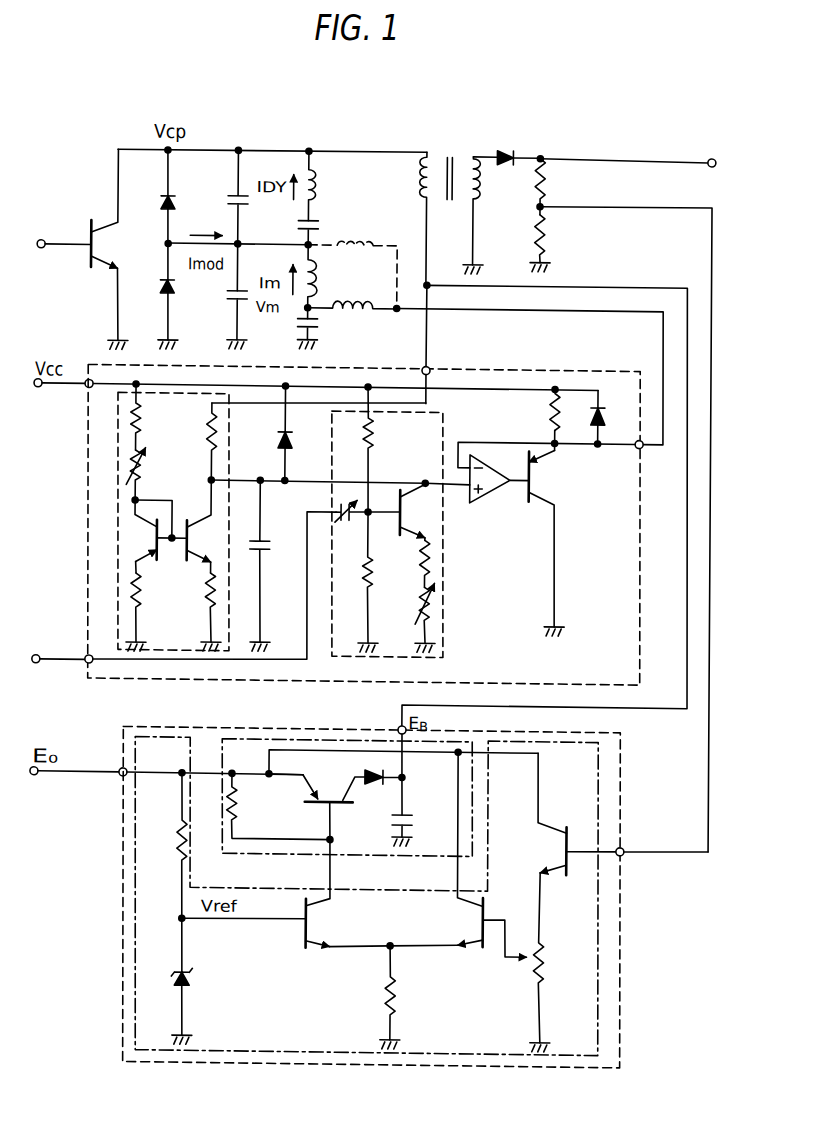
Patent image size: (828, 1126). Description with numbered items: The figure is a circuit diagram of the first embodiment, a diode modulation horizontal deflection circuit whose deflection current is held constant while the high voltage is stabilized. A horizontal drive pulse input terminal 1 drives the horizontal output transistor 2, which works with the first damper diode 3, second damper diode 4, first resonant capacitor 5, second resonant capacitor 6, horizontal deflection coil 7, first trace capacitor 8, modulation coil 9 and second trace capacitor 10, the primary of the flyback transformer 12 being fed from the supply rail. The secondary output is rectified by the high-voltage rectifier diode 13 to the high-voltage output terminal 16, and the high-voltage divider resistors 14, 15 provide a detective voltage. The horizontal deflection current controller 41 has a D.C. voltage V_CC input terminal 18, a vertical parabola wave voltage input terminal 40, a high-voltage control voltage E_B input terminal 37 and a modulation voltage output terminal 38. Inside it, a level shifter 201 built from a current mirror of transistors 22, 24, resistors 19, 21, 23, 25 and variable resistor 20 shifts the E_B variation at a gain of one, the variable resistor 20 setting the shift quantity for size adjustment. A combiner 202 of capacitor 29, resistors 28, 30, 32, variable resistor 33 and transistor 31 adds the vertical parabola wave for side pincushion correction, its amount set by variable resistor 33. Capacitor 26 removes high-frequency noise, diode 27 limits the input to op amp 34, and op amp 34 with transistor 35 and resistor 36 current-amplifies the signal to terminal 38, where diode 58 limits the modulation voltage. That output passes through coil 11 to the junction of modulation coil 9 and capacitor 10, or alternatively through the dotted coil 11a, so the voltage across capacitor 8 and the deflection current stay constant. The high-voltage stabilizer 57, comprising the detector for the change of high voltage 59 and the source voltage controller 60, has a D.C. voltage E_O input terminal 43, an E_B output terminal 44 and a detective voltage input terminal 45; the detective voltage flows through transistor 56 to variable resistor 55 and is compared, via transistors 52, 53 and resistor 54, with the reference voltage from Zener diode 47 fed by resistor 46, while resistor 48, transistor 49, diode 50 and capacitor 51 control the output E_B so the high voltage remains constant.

The horizontal drive pulse input terminal 1 is at (42, 254).
The horizontal output transistor 2 is at (99, 273).
The first damper diode 3 is at (160, 204).
The second damper diode 4 is at (162, 299).
The first resonant capacitor 5 is at (228, 200).
The second resonant capacitor 6 is at (232, 300).
The horizontal deflection coil 7 is at (316, 186).
The first trace capacitor 8 is at (296, 224).
The modulation coil 9 is at (314, 268).
The second trace capacitor 10 is at (311, 324).
The coil 11 is at (368, 312).
The coil 11a is at (364, 238).
The flyback transformer 12 is at (446, 150).
The high-voltage rectifier diode 13 is at (501, 148).
The high-voltage divider resistor 14 is at (543, 180).
The high-voltage divider resistor 15 is at (543, 235).
The high-voltage output terminal 16 is at (709, 154).
The D.C. voltage V_CC input terminal 18 is at (85, 392).
The resistor 19 is at (141, 418).
The variable resistor 20 is at (142, 479).
The resistor 21 is at (205, 431).
The transistor 22 is at (151, 562).
The resistor 23 is at (141, 606).
The transistor 24 is at (212, 538).
The resistor 25 is at (217, 598).
The capacitor 26 is at (265, 541).
The diode 27 is at (280, 436).
The resistor 28 is at (373, 436).
The capacitor 29 is at (340, 527).
The resistor 30 is at (374, 577).
The transistor 31 is at (422, 516).
The resistor 32 is at (433, 555).
The variable resistor 33 is at (434, 604).
The op amp 34 is at (500, 491).
The transistor 35 is at (545, 480).
The resistor 36 is at (549, 399).
The high-voltage control voltage E_B input terminal 37 is at (429, 368).
The modulation voltage output terminal 38 is at (641, 447).
The vertical parabola wave voltage input terminal 40 is at (88, 661).
The horizontal deflection current controller 41 is at (100, 688).
The D.C. voltage E_O input terminal 43 is at (121, 779).
The high-voltage control voltage E_B output terminal 44 is at (399, 729).
The high-voltage detective voltage input terminal 45 is at (628, 845).
The resistor 46 is at (178, 836).
The Zener diode 47 is at (196, 979).
The resistor 48 is at (229, 813).
The transistor 49 is at (338, 805).
The diode 50 is at (366, 770).
The capacitor 51 is at (412, 814).
The transistor 52 is at (320, 922).
The transistor 53 is at (475, 920).
The resistor 54 is at (400, 984).
The variable resistor 55 is at (547, 962).
The transistor 56 is at (550, 845).
The high-voltage stabilizer 57 is at (137, 948).
The diode 58 is at (604, 413).
The detector for the change of high voltage 59 is at (603, 958).
The source voltage controller 60 is at (232, 741).
The level shifter 201 is at (117, 520).
The combiner 202 is at (446, 643).